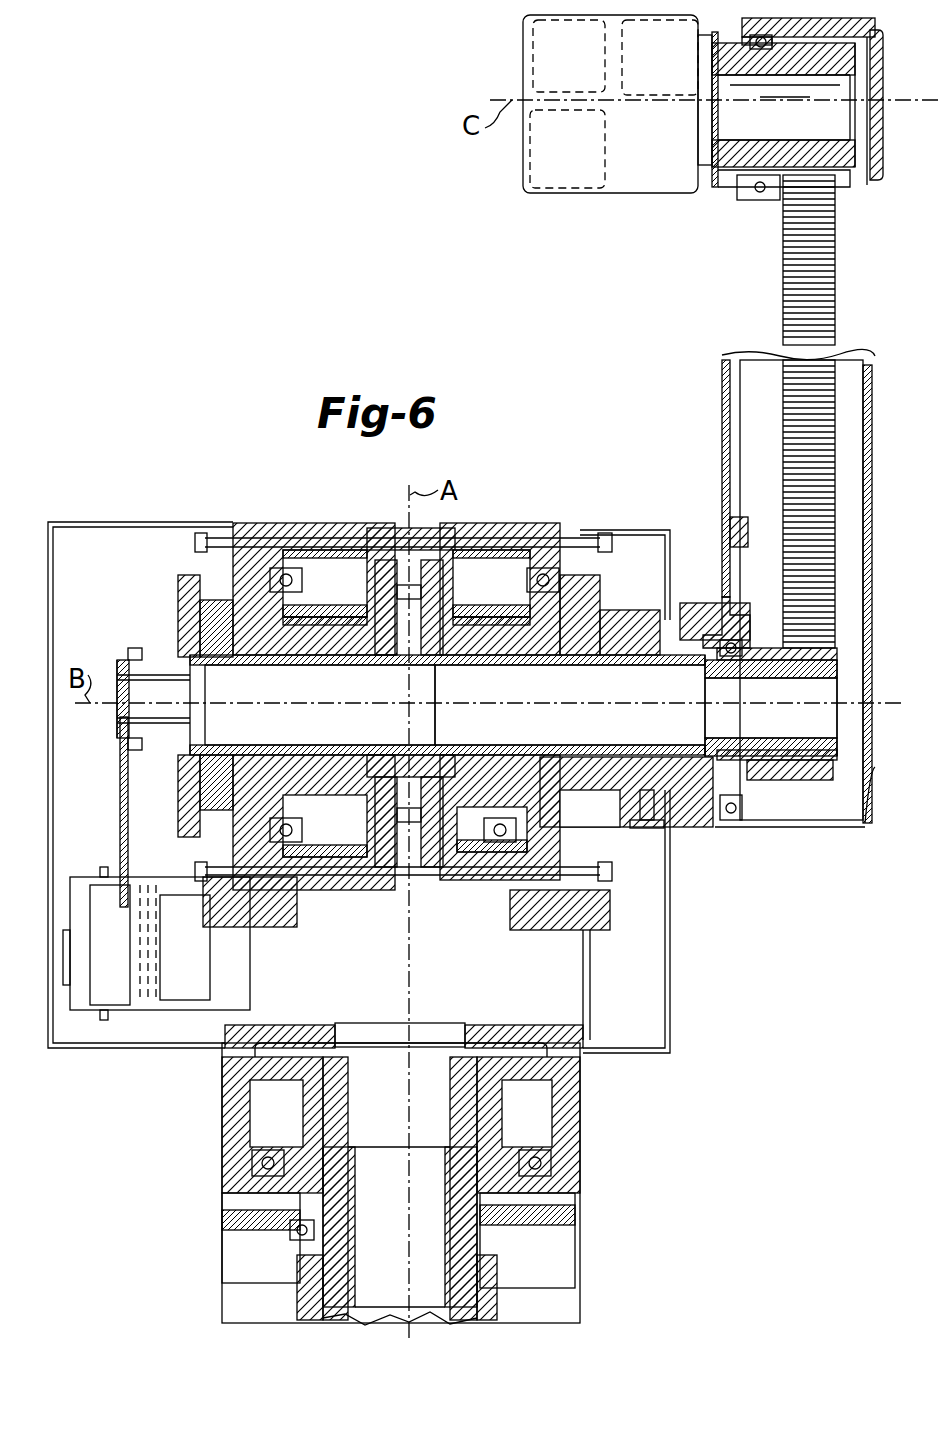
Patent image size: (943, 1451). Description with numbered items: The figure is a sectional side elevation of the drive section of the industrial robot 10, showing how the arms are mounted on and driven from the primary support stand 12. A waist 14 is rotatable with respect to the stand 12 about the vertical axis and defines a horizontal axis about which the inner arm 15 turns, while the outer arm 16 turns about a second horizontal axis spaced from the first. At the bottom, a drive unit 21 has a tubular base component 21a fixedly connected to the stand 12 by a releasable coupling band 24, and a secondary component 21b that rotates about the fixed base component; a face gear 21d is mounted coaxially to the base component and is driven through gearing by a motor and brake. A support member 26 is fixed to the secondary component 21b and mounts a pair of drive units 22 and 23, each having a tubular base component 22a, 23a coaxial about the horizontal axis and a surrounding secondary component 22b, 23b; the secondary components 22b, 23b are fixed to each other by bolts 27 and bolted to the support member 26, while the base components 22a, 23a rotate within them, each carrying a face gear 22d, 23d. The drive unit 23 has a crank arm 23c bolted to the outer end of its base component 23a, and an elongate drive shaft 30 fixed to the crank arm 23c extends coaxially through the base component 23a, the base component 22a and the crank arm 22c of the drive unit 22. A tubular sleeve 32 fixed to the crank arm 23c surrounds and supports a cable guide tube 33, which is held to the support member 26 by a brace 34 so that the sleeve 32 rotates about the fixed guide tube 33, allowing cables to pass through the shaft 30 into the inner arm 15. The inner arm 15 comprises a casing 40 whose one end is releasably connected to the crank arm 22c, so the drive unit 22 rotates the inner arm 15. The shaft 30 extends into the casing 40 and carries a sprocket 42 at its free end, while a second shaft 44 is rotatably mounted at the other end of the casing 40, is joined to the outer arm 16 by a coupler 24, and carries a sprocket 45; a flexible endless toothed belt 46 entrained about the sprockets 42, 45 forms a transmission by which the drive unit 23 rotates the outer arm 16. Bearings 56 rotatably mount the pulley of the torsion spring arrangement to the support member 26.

The industrial robot 10 is at (300, 438).
The primary support stand 12 is at (310, 1308).
The waist 14 is at (635, 1180).
The inner arm 15 is at (705, 392).
The outer arm 16 is at (525, 214).
The drive unit 21 is at (200, 1120).
The tubular base component 21a is at (448, 1108).
The secondary component 21b is at (562, 1146).
The face gear 21d is at (245, 1140).
The drive unit 22 is at (572, 508).
The tubular base component 22a is at (570, 705).
The secondary component 22b is at (540, 590).
The crank arm 22c is at (675, 752).
The face gear 22d is at (530, 514).
The drive unit 23 is at (248, 510).
The tubular base component 23a is at (320, 705).
The secondary component 23b is at (312, 500).
The crank arm 23c is at (180, 605).
The face gear 23d is at (300, 598).
The coupling band 24 is at (720, 193).
The support member 26 is at (312, 1030).
The bolts 27 is at (383, 537).
The drive shaft 30 is at (468, 700).
The tubular sleeve 32 is at (150, 658).
The cable guide tube 33 is at (142, 680).
The brace 34 is at (120, 795).
The casing 40 is at (722, 430).
The sprocket 42 is at (771, 706).
The second shaft 44 is at (735, 124).
The sprocket 45 is at (856, 160).
The flexible endless toothed belt 46 is at (790, 336).
The bearings 56 is at (666, 830).